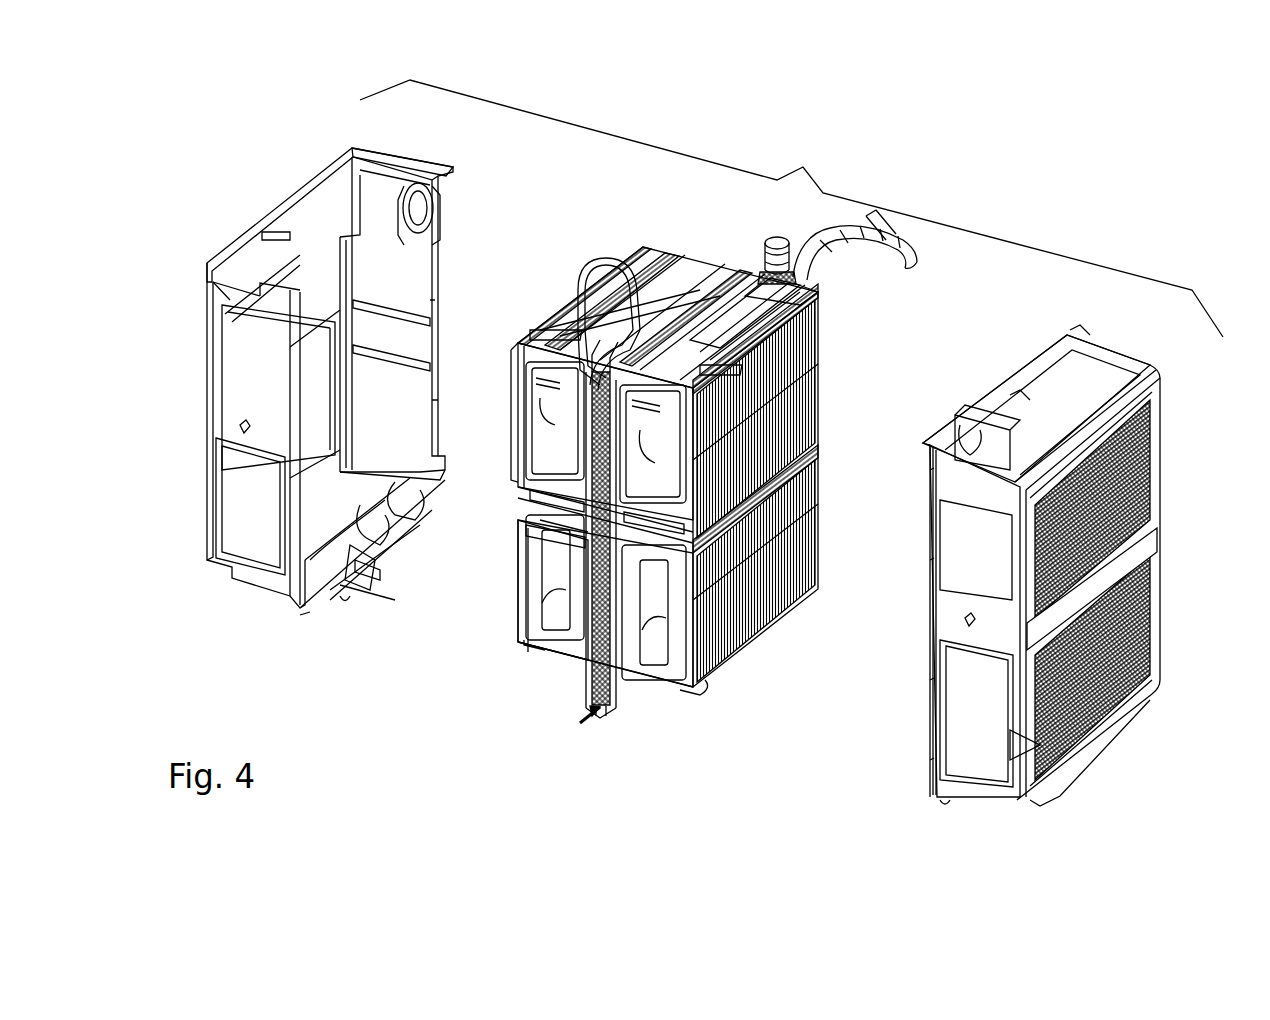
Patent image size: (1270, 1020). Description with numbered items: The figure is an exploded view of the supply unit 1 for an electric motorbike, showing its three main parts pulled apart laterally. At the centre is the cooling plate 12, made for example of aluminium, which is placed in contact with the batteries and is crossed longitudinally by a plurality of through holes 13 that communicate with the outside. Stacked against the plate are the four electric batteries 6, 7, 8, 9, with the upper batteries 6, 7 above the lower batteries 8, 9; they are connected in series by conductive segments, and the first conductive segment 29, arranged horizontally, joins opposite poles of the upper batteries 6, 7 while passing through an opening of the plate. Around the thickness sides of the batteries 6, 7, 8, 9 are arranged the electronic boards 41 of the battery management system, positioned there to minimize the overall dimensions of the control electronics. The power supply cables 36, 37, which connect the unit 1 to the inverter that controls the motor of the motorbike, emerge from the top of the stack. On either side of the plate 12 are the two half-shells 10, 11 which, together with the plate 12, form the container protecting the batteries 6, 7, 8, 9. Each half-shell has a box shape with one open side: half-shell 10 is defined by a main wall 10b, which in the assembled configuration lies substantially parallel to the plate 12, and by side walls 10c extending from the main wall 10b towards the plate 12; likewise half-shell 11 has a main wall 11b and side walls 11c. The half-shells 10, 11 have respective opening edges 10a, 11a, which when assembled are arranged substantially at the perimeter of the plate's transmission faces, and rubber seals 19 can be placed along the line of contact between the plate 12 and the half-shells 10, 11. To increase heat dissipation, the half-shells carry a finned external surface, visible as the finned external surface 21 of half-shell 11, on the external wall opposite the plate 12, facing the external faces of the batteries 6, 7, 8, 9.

The supply unit 1 is at (791, 208).
The electric battery 6 is at (810, 287).
The electric battery 7 is at (550, 320).
The electric battery 8 is at (783, 607).
The electric battery 9 is at (528, 548).
The half-shell 10 is at (300, 217).
The opening edge 10a is at (430, 317).
The main wall 10b is at (370, 415).
The side wall 10c is at (357, 170).
The half-shell 11 is at (973, 700).
The opening edge 11a is at (937, 623).
The main wall 11b is at (1130, 555).
The side wall 11c is at (1083, 383).
The cooling plate 12 is at (580, 723).
The through hole 13 is at (575, 470).
The rubber seal 19 is at (743, 243).
The finned external surface 21 is at (1160, 413).
The first conductive segment 29 is at (628, 280).
The power supply cable 36 is at (888, 260).
The power supply cable 37 is at (933, 242).
The electronic board 41 is at (548, 400).